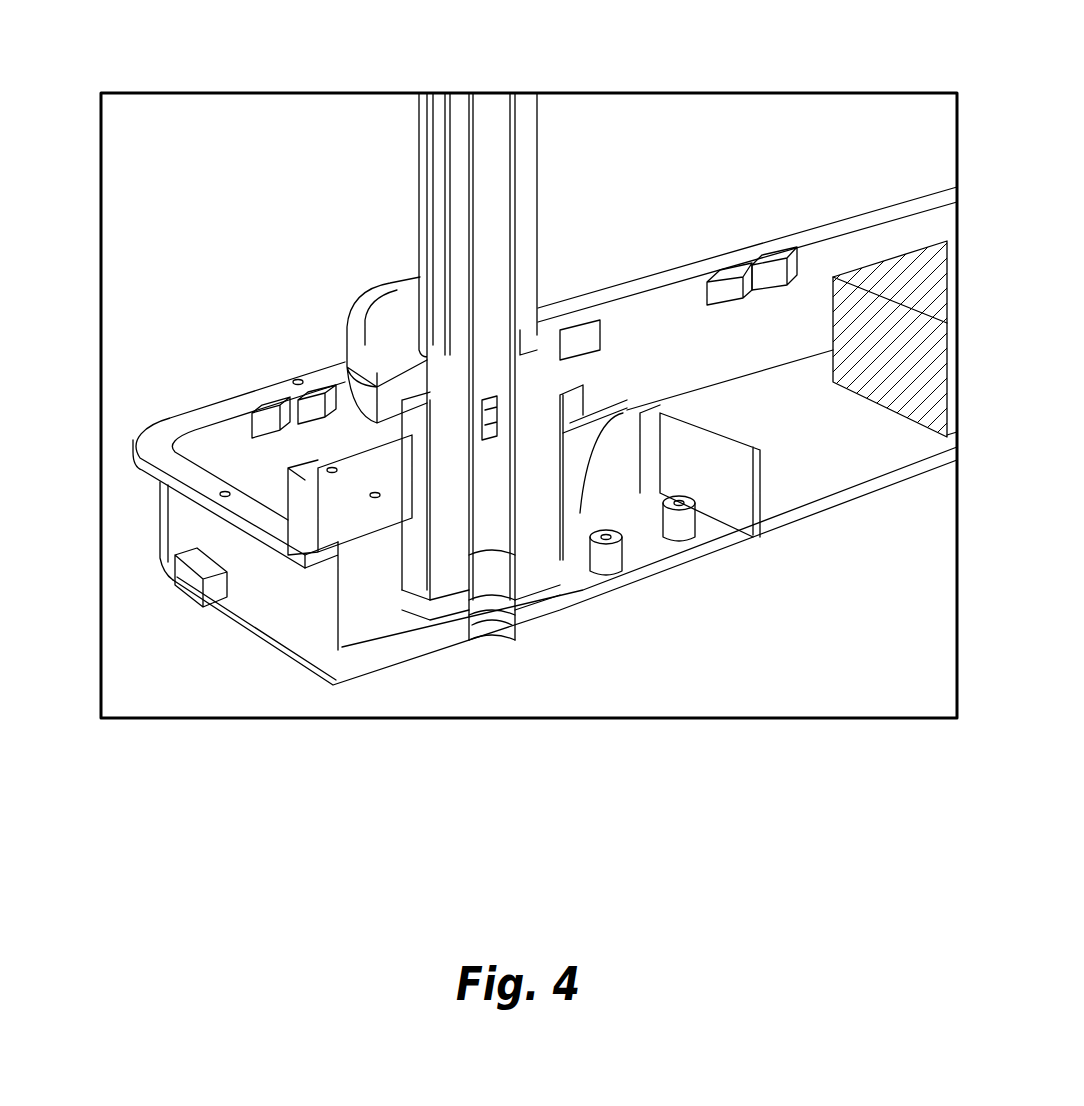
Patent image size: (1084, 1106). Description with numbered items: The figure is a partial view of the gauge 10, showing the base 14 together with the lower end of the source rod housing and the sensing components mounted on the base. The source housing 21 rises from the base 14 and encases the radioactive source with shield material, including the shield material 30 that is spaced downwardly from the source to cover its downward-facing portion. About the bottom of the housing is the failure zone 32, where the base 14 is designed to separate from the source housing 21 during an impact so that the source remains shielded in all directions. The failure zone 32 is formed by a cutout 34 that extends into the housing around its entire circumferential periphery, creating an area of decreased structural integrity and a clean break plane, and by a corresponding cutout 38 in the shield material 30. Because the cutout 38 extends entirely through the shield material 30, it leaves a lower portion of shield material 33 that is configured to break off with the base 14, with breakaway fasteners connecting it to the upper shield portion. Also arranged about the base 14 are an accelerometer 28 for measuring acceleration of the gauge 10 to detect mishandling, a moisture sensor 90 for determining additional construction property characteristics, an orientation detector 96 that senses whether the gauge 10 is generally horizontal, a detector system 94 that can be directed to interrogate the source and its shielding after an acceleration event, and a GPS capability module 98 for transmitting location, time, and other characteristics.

The gauge 10 is at (529, 386).
The base 14 is at (835, 520).
The source housing 21 is at (432, 632).
The accelerometer 28 is at (272, 419).
The shield material 30 is at (541, 562).
The failure zone 32 is at (581, 513).
The lower portion of shield material 33 is at (543, 526).
The cutout 34 is at (400, 586).
The cutout 38 is at (450, 592).
The moisture sensor 90 is at (186, 583).
The detector system 94 is at (733, 287).
The orientation detector 96 is at (320, 407).
The GPS capability module 98 is at (913, 280).